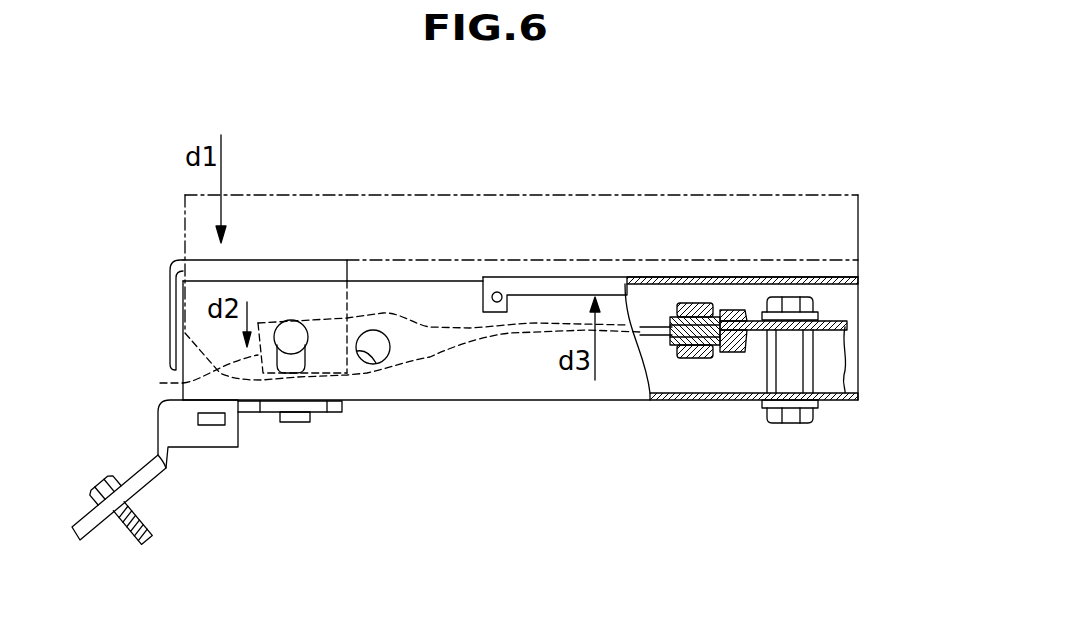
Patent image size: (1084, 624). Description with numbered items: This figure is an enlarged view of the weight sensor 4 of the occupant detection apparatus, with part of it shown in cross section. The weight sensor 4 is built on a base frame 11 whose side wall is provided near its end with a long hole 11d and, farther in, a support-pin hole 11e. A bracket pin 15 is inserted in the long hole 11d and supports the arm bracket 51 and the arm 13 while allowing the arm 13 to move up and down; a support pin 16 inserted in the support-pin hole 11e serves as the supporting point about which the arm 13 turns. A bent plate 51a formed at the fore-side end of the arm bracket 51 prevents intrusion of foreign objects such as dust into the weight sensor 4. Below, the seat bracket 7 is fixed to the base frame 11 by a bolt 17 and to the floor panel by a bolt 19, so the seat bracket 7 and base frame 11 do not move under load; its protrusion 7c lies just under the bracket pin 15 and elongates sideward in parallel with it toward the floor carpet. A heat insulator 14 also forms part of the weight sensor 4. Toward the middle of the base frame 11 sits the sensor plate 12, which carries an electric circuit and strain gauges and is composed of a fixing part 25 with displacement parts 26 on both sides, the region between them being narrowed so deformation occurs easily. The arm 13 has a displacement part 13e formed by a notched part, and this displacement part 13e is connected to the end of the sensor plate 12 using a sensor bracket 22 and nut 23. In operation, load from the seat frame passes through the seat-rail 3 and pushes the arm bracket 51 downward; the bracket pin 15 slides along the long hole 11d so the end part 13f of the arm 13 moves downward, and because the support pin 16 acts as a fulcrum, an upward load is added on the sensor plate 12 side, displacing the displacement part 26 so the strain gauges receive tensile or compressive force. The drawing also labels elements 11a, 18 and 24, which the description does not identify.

The seat-rail 3 is at (495, 193).
The weight sensor 4 is at (733, 302).
The seat bracket 7 is at (157, 487).
The protrusion 7c is at (324, 413).
The base frame 11 is at (557, 402).
The base frame bottom plate 11a is at (838, 402).
The long hole 11d is at (300, 423).
The support-pin hole 11e is at (375, 366).
The sensor plate 12 is at (753, 332).
The arm 13 is at (407, 368).
The displacement part 13e is at (508, 333).
The end part 13f is at (145, 383).
The heat insulator 14 is at (627, 280).
The bracket pin 15 is at (291, 335).
The support pin 16 is at (373, 345).
The bolt 17 is at (287, 423).
The pin hole 18 is at (496, 291).
The bolt 19 is at (108, 490).
The sensor bracket 22 is at (660, 305).
The nut 23 is at (693, 303).
The bolt 24 is at (787, 424).
The fixing part 25 is at (842, 348).
The displacement part 26 is at (665, 358).
The arm bracket 51 is at (246, 264).
The bent plate 51a is at (170, 312).